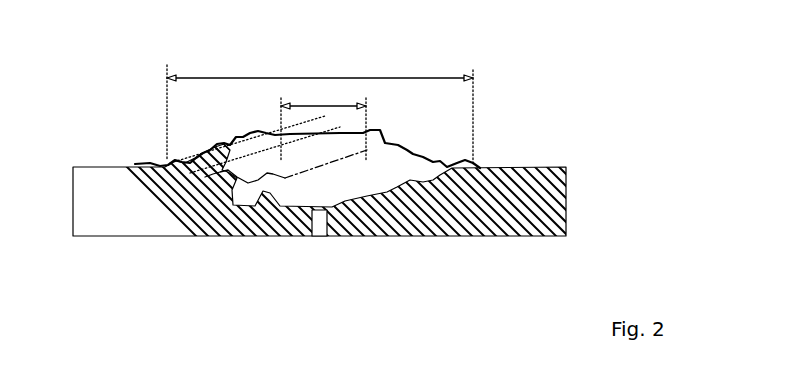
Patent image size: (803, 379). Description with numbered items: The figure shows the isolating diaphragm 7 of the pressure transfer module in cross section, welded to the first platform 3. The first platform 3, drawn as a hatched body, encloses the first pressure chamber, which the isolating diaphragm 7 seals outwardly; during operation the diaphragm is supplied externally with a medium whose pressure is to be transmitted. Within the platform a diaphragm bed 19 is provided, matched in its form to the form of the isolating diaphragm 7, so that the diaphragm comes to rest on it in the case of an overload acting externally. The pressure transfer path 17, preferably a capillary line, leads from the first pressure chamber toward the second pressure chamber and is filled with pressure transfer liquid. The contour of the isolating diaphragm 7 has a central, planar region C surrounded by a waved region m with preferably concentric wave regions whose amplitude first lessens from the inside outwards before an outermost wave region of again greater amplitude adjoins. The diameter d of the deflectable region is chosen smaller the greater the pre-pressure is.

The first platform 3 is at (93, 164).
The isolating diaphragm 7 is at (197, 117).
The pressure transfer path 17 is at (318, 214).
The diaphragm bed 19 is at (231, 188).
The diameter of the deflectable region d is at (320, 110).
The waved region m is at (247, 166).
The central planar region C is at (316, 130).